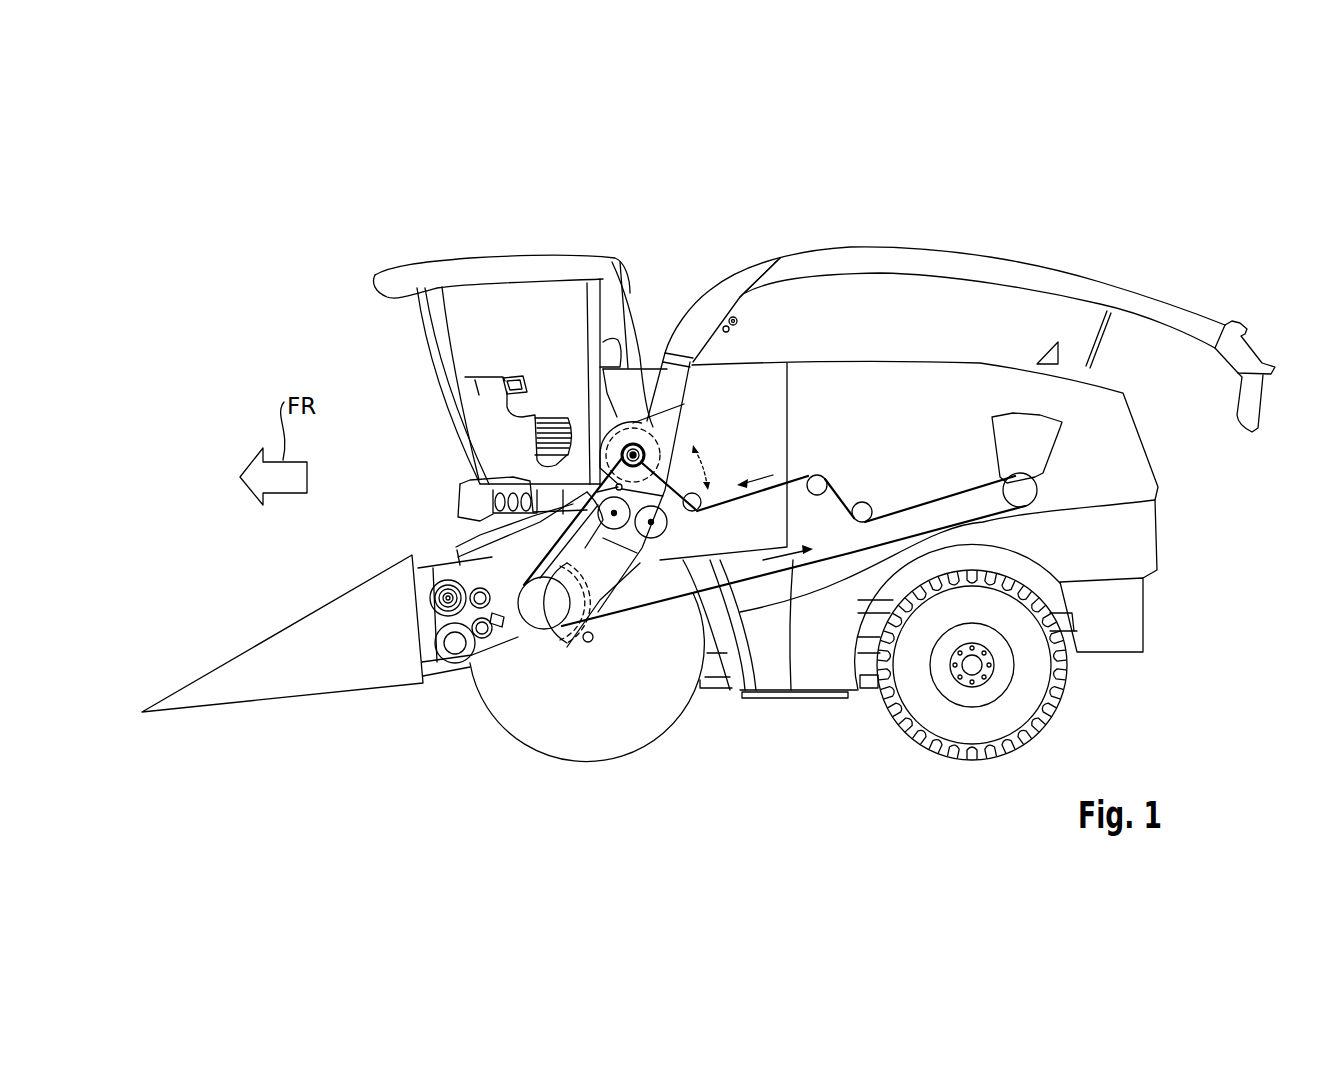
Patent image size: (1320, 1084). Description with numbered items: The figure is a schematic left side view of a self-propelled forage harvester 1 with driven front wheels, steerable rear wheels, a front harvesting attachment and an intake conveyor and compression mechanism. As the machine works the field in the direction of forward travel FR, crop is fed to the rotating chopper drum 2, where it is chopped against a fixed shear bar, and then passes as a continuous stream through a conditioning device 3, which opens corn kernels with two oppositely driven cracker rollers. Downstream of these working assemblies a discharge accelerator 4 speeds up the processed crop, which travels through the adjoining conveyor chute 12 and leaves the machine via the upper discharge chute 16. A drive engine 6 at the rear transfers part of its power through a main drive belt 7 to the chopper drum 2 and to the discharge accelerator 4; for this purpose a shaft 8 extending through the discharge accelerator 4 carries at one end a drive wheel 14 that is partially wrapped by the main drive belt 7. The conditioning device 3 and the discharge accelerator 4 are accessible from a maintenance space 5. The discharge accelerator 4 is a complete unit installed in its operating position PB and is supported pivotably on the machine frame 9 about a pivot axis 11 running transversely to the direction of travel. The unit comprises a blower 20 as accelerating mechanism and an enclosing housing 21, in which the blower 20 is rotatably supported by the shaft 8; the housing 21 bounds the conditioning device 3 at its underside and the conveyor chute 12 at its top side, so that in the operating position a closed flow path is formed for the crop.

The forage harvester 1 is at (658, 226).
The chopper drum 2 is at (523, 655).
The conditioning device 3 is at (655, 553).
The discharge accelerator 4 is at (606, 430).
The maintenance space 5 is at (776, 392).
The drive engine 6 is at (1030, 452).
The main drive belt 7 is at (791, 690).
The shaft 8 is at (628, 455).
The machine frame 9 is at (716, 665).
The pivot axis 11 is at (468, 498).
The conveyor chute 12 is at (696, 404).
The drive wheel 14 is at (660, 447).
The upper discharge chute 16 is at (838, 258).
The blower 20 is at (623, 432).
The housing 21 is at (647, 421).